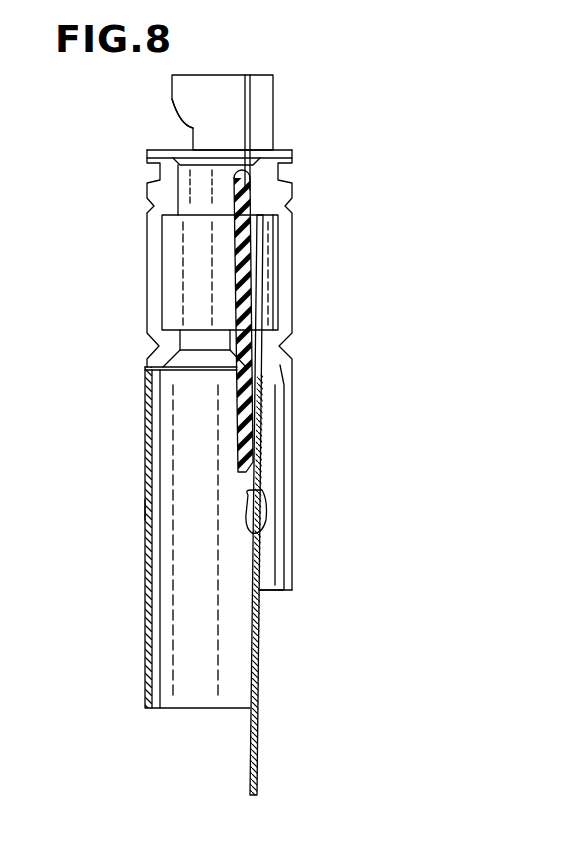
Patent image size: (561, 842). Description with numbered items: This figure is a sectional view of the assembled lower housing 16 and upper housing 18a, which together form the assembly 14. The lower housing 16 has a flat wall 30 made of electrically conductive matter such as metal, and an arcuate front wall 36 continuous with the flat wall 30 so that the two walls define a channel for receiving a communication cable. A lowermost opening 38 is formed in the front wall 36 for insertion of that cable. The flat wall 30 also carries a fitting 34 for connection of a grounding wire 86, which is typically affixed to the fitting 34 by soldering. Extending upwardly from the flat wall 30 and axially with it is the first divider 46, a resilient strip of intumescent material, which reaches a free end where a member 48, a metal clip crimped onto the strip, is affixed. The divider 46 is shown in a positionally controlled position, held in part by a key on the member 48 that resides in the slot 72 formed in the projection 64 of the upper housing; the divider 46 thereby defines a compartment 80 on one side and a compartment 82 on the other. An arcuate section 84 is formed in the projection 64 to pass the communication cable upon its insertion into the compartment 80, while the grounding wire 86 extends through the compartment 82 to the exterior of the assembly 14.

The projection 64 is at (213, 82).
The slot 72 is at (252, 97).
The arcuate section 84 is at (182, 120).
The grounding wire 86 is at (255, 150).
The member 48 is at (238, 182).
The compartment 80 is at (185, 238).
The first divider 46 is at (252, 255).
The compartment 82 is at (268, 282).
The assembly 14 is at (317, 327).
The lower housing 16 is at (132, 430).
The upper housing 18a is at (307, 400).
The arcuate front wall 36 is at (147, 507).
The fitting 34 is at (260, 513).
The flat wall 30 is at (260, 630).
The lowermost opening 38 is at (218, 750).